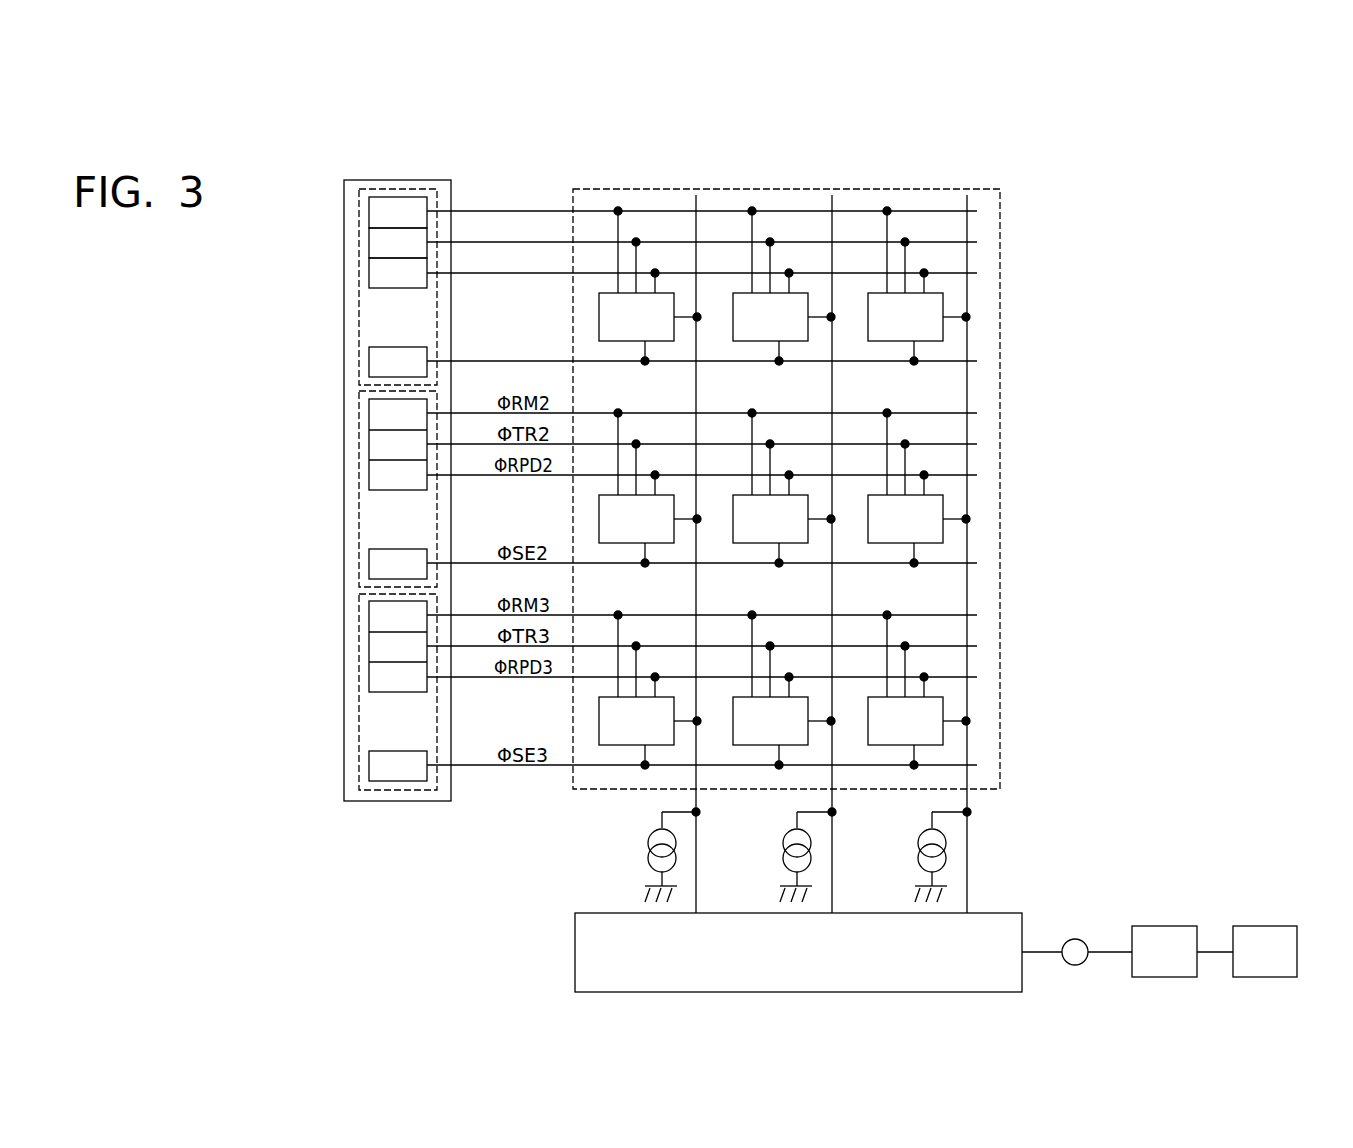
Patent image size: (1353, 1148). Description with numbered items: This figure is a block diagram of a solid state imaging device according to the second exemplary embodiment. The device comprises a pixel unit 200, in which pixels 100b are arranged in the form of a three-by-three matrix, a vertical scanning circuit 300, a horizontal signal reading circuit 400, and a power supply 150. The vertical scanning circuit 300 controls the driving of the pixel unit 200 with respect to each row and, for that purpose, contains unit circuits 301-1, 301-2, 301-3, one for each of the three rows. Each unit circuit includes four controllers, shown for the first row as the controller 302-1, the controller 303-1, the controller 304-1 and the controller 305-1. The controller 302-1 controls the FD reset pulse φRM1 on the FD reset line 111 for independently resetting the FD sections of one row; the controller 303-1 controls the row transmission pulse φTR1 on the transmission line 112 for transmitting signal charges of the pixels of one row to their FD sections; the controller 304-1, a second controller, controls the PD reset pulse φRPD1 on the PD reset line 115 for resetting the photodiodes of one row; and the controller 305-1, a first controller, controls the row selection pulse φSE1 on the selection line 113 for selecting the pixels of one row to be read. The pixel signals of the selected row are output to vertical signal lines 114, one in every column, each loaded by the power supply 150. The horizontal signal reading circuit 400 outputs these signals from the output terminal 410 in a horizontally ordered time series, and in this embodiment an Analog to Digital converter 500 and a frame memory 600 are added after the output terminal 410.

The pixel 100b is at (933, 505).
The FD reset line 111 is at (594, 210).
The transmission line 112 is at (662, 242).
The PD reset line 115 is at (730, 270).
The selection line 113 is at (945, 360).
The vertical signal line 114 is at (967, 255).
The power supply 150 is at (932, 828).
The pixel unit 200 is at (932, 188).
The vertical scanning circuit 300 is at (402, 178).
The unit circuit 301-1 is at (358, 312).
The unit circuit 301-2 is at (358, 517).
The unit circuit 301-3 is at (358, 719).
The controller 302-1 is at (369, 210).
The controller 303-1 is at (369, 240).
The controller 304-1 is at (369, 270).
The controller 305-1 is at (369, 360).
The horizontal signal reading circuit 400 is at (993, 910).
The output terminal 410 is at (1075, 937).
The Analog to Digital (AD) converter 500 is at (1163, 925).
The frame memory 600 is at (1263, 925).